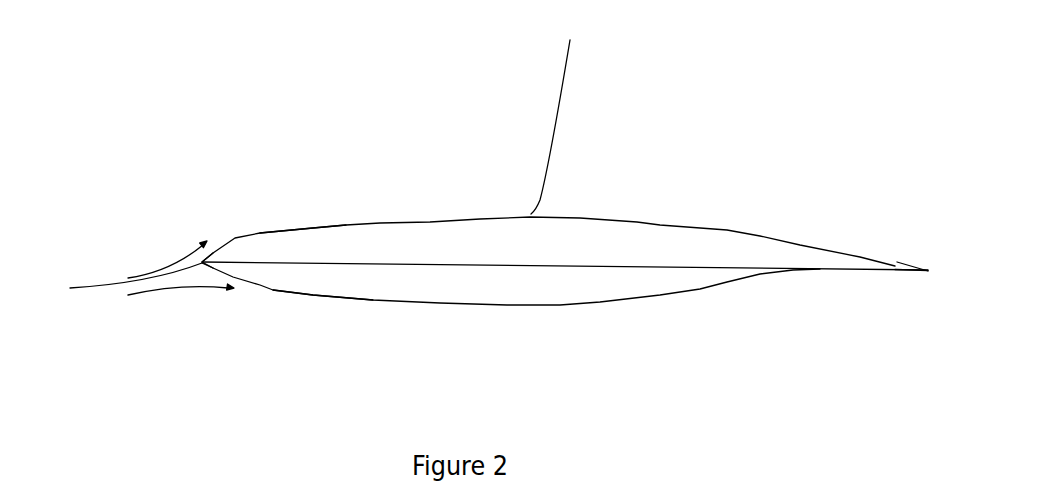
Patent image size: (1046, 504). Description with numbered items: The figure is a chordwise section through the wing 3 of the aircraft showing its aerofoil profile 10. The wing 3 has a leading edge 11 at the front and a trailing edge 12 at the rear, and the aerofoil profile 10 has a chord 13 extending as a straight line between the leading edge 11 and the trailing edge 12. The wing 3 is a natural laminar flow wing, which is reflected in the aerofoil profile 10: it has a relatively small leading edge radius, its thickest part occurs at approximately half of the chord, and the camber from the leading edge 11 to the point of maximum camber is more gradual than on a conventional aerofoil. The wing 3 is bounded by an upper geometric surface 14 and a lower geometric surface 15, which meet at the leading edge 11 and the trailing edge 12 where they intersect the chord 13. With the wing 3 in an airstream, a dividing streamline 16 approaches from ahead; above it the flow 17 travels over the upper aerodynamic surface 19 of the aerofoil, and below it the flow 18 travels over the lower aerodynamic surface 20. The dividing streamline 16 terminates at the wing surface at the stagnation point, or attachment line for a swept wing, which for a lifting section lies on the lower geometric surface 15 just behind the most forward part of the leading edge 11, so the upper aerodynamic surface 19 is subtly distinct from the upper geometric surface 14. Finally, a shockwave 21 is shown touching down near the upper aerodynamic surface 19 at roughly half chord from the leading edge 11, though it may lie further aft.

The wing 3 is at (272, 164).
The aerofoil profile 10 is at (390, 285).
The leading edge 11 is at (222, 251).
The trailing edge 12 is at (920, 259).
The chord 13 is at (613, 267).
The upper geometric surface 14 is at (346, 214).
The lower geometric surface 15 is at (508, 314).
The dividing streamline 16 is at (78, 281).
The flow over upper aerodynamic surface 17 is at (155, 270).
The flow over lower aerodynamic surface 18 is at (190, 287).
The upper aerodynamic surface 19 is at (313, 228).
The lower aerodynamic surface 20 is at (313, 295).
The shockwave 21 is at (563, 90).